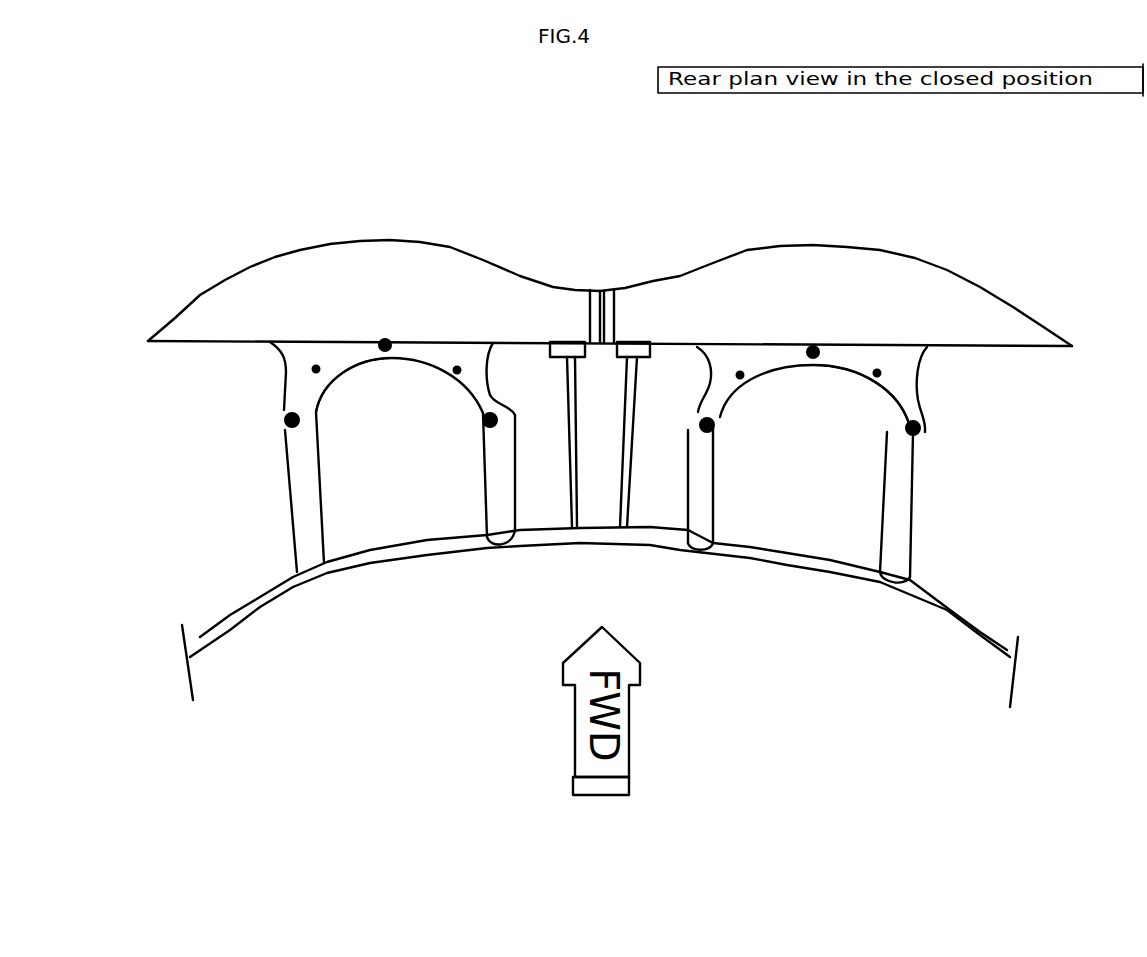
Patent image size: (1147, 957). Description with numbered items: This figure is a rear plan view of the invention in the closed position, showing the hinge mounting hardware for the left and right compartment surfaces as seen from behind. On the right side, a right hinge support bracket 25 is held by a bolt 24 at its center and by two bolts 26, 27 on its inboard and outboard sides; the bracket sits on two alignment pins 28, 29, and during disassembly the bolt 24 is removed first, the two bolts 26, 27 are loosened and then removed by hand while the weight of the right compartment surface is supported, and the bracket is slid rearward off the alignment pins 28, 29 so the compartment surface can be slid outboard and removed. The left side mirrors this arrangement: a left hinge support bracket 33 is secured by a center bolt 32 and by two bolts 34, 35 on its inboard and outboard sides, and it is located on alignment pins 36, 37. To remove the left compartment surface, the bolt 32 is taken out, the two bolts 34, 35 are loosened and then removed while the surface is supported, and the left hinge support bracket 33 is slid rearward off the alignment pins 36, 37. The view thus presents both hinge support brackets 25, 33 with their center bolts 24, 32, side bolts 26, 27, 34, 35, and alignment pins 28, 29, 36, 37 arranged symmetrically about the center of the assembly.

The bolt 24 is at (817, 347).
The right hinge support bracket 25 is at (862, 362).
The bolt 26 is at (715, 413).
The bolt 27 is at (920, 417).
The alignment pin 28 is at (747, 367).
The alignment pin 29 is at (885, 368).
The bolt 32 is at (378, 332).
The left hinge support bracket 33 is at (333, 350).
The bolt 34 is at (282, 408).
The bolt 35 is at (485, 408).
The alignment pin 36 is at (308, 363).
The alignment pin 37 is at (453, 360).